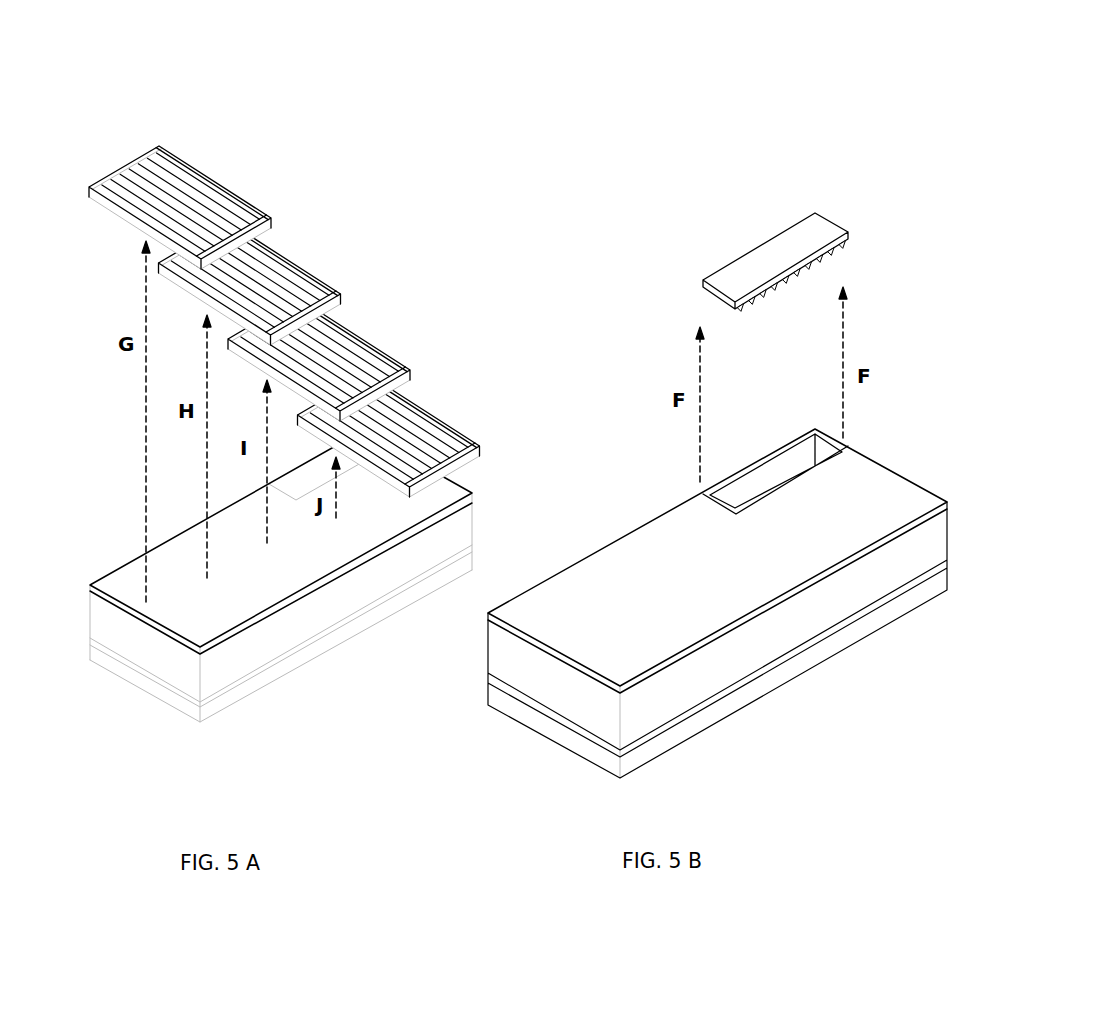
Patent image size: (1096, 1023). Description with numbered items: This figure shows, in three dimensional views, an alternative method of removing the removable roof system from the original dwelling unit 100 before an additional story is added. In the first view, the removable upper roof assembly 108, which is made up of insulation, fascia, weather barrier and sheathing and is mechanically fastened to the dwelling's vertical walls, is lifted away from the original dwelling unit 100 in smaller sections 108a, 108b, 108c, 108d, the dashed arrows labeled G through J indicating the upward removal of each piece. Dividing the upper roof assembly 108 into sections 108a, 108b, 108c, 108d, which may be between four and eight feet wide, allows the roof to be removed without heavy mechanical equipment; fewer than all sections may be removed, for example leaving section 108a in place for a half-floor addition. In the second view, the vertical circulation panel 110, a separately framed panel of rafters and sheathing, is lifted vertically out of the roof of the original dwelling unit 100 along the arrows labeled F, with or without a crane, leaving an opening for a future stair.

In FIG. 5A, the removable upper roof assembly 108 is at (293, 265).
In FIG. 5A, the section of upper roof assembly 108a is at (227, 187).
In FIG. 5A, the section of upper roof assembly 108b is at (305, 264).
In FIG. 5A, the section of upper roof assembly 108c is at (377, 343).
In FIG. 5A, the section of upper roof assembly 108d is at (443, 413).
In FIG. 5A, the original dwelling unit 100 is at (133, 697).
In FIG. 5B, the original dwelling unit 100 is at (527, 740).
In FIG. 5B, the vertical circulation panel 110 is at (745, 251).